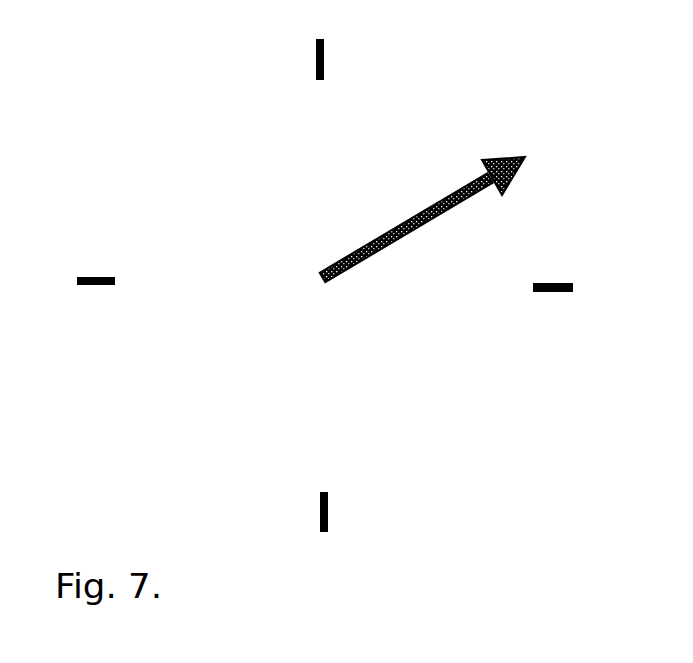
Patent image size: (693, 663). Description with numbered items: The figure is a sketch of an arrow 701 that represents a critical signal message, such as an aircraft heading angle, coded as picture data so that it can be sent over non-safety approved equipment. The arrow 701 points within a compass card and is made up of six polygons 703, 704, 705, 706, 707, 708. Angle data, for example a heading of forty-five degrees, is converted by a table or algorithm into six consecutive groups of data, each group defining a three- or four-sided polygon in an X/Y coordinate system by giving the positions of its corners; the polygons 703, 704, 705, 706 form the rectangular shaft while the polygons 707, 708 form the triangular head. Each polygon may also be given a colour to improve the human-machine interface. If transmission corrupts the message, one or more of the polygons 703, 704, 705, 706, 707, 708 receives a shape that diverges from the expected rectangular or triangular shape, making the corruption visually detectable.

The arrow 701 is at (418, 157).
The polygon 703 is at (325, 266).
The polygon 704 is at (363, 262).
The polygon 705 is at (410, 227).
The polygon 706 is at (440, 210).
The polygon 707 is at (480, 178).
The polygon 708 is at (513, 172).